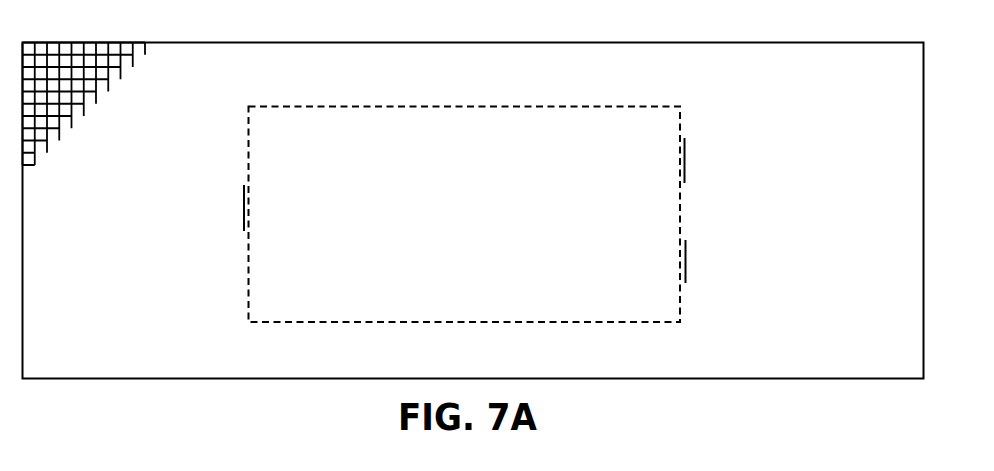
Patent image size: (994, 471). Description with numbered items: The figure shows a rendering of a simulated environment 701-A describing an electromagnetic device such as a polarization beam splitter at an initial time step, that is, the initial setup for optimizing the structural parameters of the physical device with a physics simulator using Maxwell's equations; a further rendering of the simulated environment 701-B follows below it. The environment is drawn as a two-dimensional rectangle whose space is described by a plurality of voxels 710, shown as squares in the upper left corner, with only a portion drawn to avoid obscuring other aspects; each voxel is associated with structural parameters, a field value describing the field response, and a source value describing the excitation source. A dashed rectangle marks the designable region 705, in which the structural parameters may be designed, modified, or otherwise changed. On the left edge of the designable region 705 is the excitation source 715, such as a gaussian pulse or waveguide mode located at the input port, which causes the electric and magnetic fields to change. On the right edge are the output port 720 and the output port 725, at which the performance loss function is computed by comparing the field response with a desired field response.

The simulated environment 701-A is at (86, 32).
The simulated environment 701-B is at (59, 462).
The designable region 705 is at (293, 145).
The plurality of voxels 710 is at (28, 171).
The excitation source 715 is at (244, 236).
The output port 720 is at (684, 134).
The output port 725 is at (688, 283).